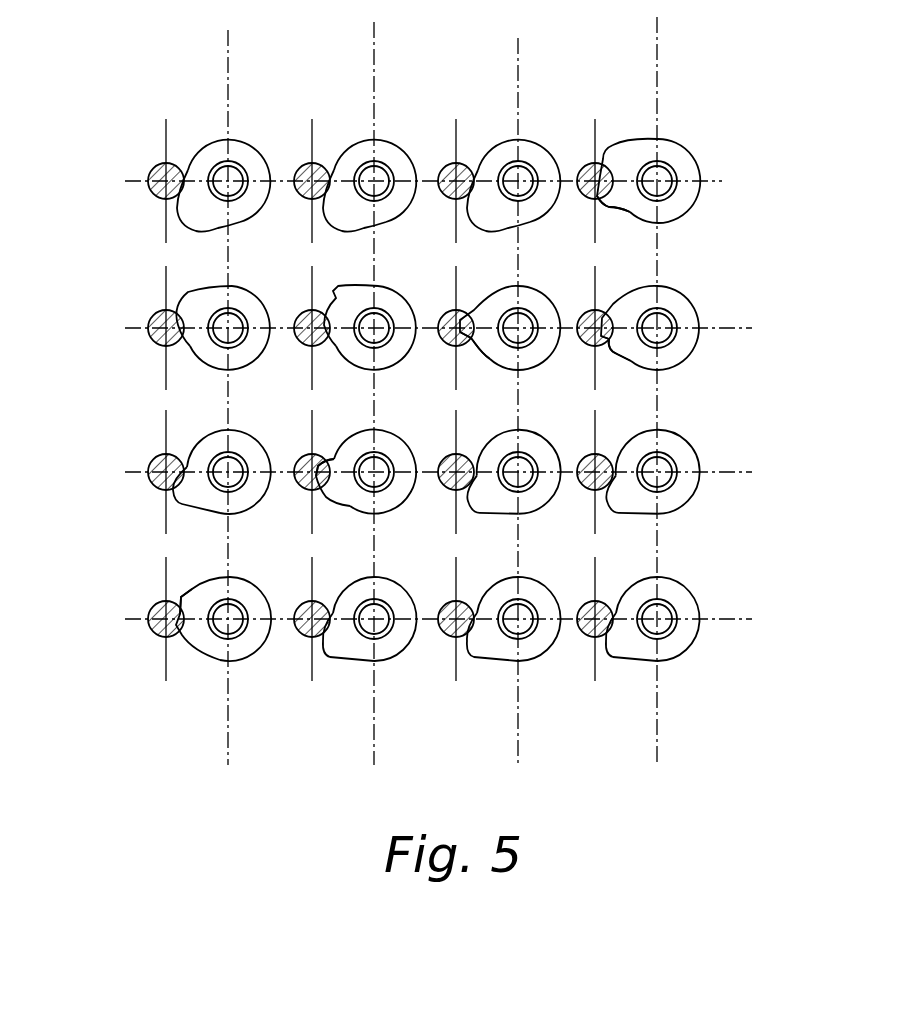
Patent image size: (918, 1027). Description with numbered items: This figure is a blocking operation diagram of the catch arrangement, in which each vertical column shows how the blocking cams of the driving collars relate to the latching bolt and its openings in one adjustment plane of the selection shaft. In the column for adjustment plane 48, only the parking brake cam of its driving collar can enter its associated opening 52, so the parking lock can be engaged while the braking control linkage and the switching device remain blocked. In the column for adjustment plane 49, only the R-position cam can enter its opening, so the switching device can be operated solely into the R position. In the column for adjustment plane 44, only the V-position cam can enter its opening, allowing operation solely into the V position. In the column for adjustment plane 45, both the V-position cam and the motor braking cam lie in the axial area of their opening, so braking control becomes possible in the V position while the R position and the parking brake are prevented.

The adjustment plane 44 is at (522, 62).
The adjustment plane 45 is at (661, 62).
The adjustment plane 48 is at (232, 62).
The adjustment plane 49 is at (378, 62).
The slot-shaped opening 52 is at (180, 598).